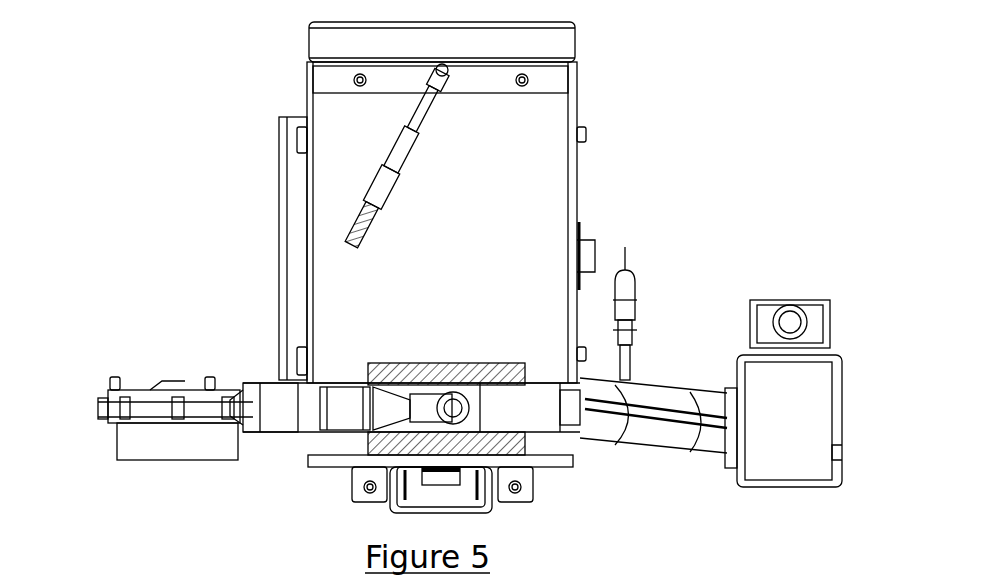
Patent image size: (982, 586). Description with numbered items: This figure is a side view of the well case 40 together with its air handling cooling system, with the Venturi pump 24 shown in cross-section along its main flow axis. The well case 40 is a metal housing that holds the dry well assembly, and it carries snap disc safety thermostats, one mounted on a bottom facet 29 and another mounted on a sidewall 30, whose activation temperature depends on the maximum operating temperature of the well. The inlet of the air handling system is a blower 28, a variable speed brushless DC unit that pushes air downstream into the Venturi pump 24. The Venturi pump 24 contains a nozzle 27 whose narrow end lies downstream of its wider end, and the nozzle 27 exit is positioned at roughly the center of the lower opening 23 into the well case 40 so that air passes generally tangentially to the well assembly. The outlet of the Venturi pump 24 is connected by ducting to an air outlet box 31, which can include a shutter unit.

The well case 40 is at (577, 182).
The sidewall 30 is at (590, 243).
The air outlet box 31 is at (810, 377).
The lower opening 23 is at (470, 407).
The nozzle 27 is at (370, 412).
The blower 28 is at (197, 397).
The bottom facet 29 is at (440, 478).
The Venturi pump 24 is at (493, 442).